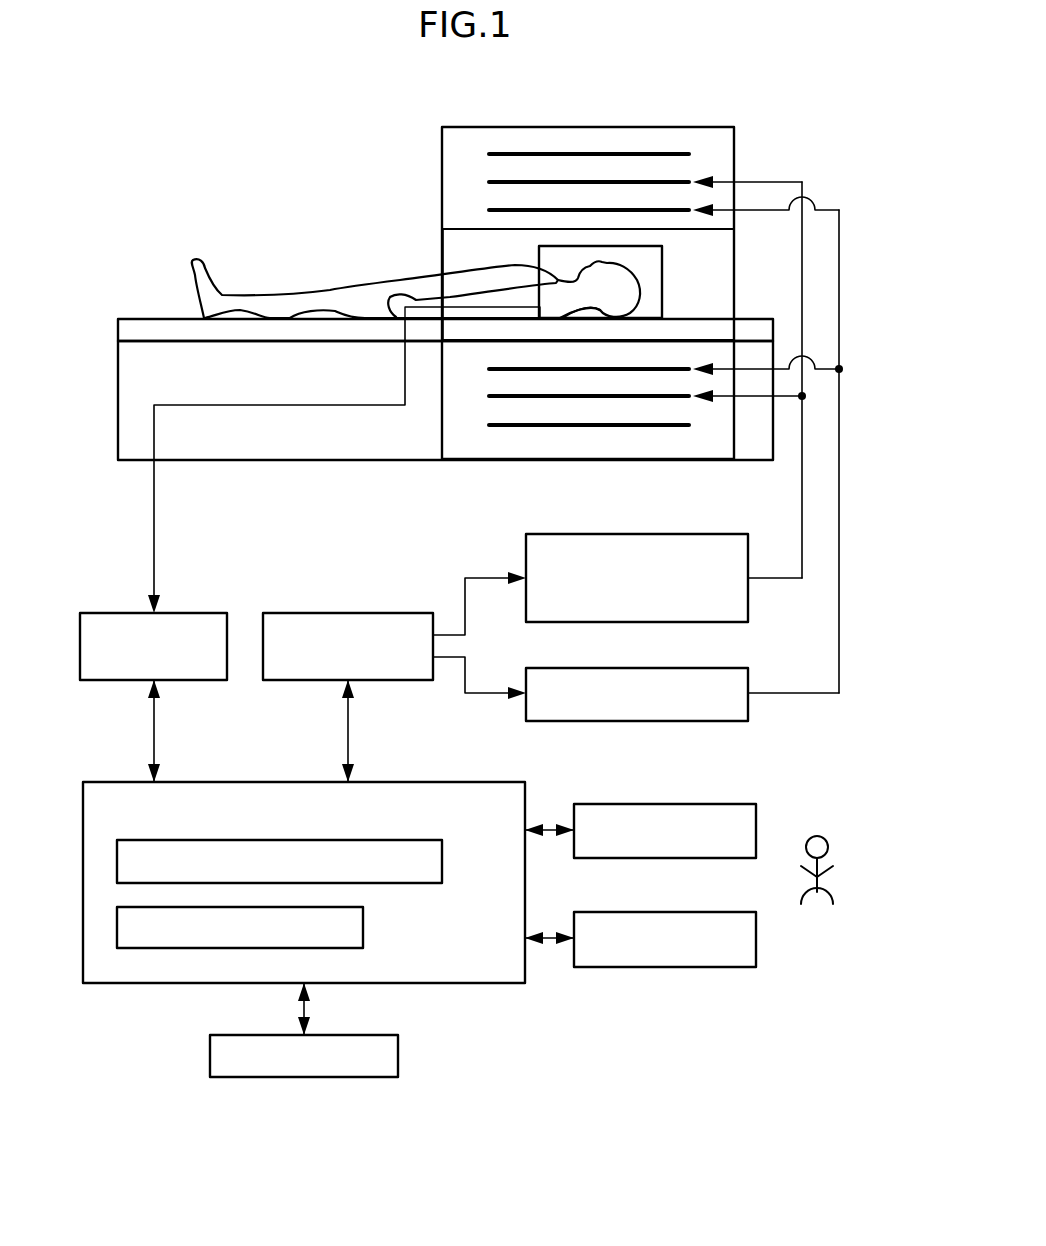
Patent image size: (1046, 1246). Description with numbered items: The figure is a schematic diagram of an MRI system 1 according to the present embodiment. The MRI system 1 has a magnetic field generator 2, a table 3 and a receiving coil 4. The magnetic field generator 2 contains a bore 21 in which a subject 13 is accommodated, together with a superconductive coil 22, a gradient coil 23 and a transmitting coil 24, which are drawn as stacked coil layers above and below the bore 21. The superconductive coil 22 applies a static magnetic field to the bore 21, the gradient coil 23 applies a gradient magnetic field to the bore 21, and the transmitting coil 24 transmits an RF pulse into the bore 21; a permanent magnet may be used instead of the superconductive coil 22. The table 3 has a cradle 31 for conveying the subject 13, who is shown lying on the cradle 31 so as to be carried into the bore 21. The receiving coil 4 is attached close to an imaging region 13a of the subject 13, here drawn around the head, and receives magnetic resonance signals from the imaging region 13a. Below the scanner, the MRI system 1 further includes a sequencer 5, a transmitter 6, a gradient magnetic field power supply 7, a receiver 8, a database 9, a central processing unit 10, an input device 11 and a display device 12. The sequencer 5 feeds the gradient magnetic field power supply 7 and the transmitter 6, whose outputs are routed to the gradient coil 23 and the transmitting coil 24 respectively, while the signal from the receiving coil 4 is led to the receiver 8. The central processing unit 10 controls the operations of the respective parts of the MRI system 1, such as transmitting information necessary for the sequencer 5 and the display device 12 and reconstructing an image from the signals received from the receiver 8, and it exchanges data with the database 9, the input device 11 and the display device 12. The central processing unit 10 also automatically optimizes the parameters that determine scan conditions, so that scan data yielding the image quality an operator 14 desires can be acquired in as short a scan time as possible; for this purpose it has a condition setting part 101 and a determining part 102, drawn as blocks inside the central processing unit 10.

The MRI system 1 is at (172, 150).
The magnetic field generator 2 is at (579, 127).
The bore 21 is at (460, 252).
The superconductive coil 22 is at (489, 154).
The gradient coil 23 is at (489, 182).
The transmitting coil 24 is at (489, 210).
The table 3 is at (118, 398).
The cradle 31 is at (118, 329).
The receiving coil 4 is at (663, 261).
The sequencer 5 is at (348, 612).
The transmitter 6 is at (700, 665).
The gradient magnetic field power supply 7 is at (681, 533).
The receiver 8 is at (188, 612).
The database 9 is at (400, 1058).
The central processing unit 10 is at (258, 781).
The condition setting part 101 is at (443, 862).
The determining part 102 is at (364, 927).
The input device 11 is at (666, 803).
The display device 12 is at (665, 967).
The subject 13 is at (361, 278).
The imaging region 13a is at (633, 296).
The operator 14 is at (824, 880).